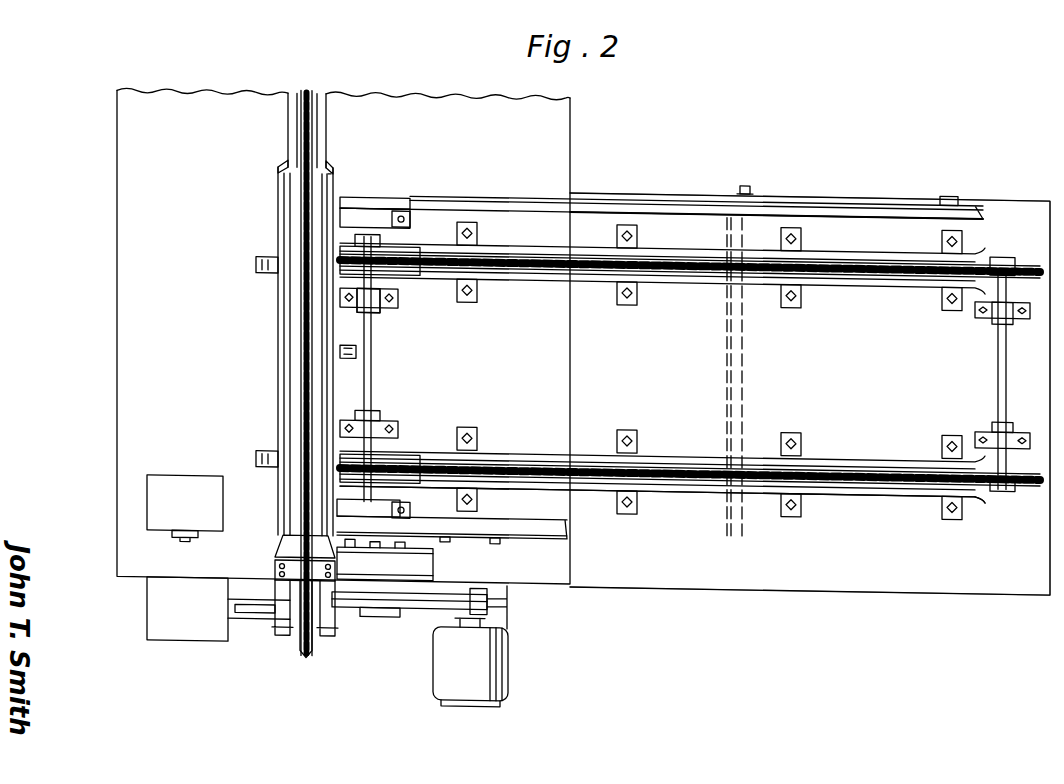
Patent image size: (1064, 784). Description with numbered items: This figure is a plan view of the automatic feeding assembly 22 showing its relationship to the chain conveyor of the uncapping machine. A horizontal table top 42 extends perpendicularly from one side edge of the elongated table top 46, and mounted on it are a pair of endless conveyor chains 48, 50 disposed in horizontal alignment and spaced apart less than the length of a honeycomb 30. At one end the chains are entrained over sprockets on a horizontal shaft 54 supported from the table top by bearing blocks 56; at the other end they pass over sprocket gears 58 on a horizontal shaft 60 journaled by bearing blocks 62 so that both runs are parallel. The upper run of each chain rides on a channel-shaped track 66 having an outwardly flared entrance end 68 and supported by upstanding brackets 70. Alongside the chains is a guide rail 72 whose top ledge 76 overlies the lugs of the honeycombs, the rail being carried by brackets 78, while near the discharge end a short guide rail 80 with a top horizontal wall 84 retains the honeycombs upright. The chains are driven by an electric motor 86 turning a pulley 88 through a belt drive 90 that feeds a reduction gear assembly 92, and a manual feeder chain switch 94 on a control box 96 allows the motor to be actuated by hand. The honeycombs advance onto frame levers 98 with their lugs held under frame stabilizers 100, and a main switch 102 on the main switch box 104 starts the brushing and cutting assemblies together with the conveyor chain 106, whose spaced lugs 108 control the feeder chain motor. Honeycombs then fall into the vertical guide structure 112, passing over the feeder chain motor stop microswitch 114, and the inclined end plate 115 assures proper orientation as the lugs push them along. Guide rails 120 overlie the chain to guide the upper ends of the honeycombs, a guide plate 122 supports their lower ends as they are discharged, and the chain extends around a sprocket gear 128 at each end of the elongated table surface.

The feeding assembly 22 is at (734, 605).
The honeycomb 30 is at (722, 398).
The table top 42 is at (898, 565).
The elongated table top 46 is at (130, 343).
The conveyor chain 48 is at (858, 287).
The conveyor chain 50 is at (838, 456).
The shaft 54 is at (996, 384).
The bearing blocks 56 is at (988, 312).
The sprocket gears 58 is at (395, 283).
The shaft 60 is at (372, 389).
The bearing blocks 62 is at (375, 307).
The track 66 is at (605, 285).
The flared entrance end 68 is at (972, 497).
The brackets 70 is at (800, 492).
The guide rail 72 is at (852, 200).
The ledge 76 is at (790, 199).
The brackets 78 is at (740, 188).
The guide rail 80 is at (504, 546).
The top horizontal wall 84 is at (490, 522).
The electric motor 86 is at (455, 675).
The pulley 88 is at (420, 613).
The belt drive 90 is at (506, 602).
The reduction gear assembly 92 is at (425, 565).
The manual feeder chain switch 94 is at (186, 546).
The control box 96 is at (165, 495).
The frame levers 98 is at (398, 214).
The frame stabilizers 100 is at (360, 201).
The main switch 102 is at (247, 620).
The main switch box 104 is at (185, 615).
The conveyor chain 106 is at (308, 96).
The lugs 108 is at (302, 655).
The vertical guide structure 112 is at (268, 375).
The feeder chain motor stop microswitch 114 is at (340, 349).
The end plate 115 is at (300, 552).
The guide rails 120 is at (288, 148).
The guide plate 122 is at (335, 185).
The sprocket gear 128 is at (318, 640).